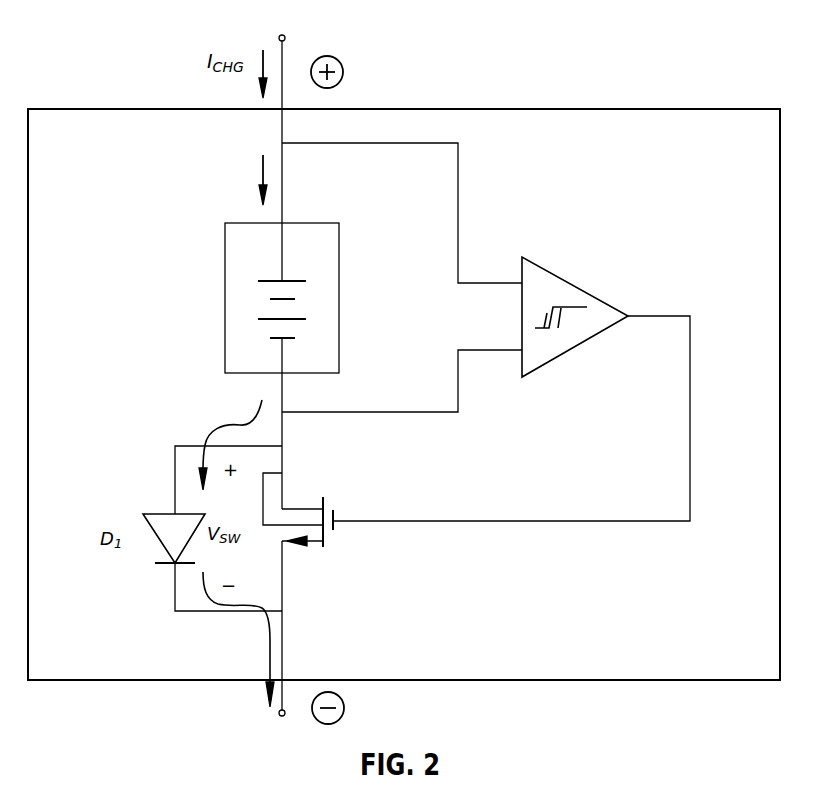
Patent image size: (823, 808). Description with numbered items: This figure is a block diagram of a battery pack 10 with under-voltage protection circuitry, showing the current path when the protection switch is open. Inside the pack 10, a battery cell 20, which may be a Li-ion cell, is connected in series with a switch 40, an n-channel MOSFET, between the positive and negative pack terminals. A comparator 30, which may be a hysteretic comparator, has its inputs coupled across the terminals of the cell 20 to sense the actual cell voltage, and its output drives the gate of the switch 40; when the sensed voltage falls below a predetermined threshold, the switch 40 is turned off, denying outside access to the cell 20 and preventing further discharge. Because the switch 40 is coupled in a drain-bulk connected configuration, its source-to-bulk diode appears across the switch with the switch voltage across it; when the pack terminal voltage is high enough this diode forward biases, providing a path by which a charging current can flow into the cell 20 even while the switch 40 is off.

The battery pack 10 is at (675, 71).
The battery cell 20 is at (248, 318).
The comparator 30 is at (564, 317).
The switch 40 is at (338, 480).